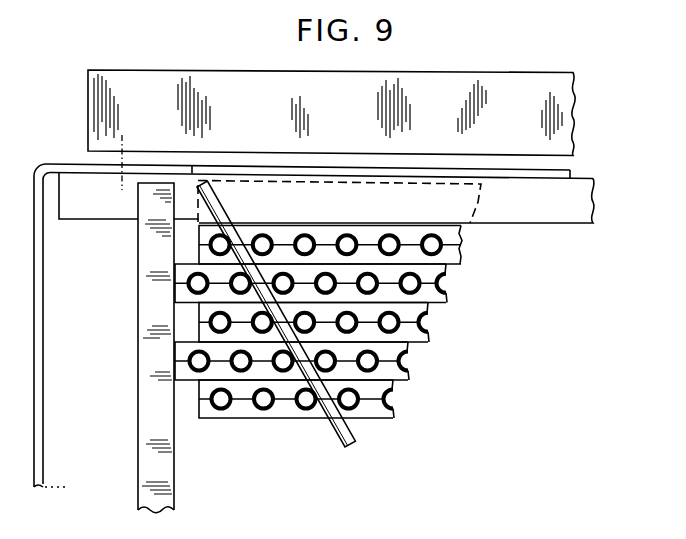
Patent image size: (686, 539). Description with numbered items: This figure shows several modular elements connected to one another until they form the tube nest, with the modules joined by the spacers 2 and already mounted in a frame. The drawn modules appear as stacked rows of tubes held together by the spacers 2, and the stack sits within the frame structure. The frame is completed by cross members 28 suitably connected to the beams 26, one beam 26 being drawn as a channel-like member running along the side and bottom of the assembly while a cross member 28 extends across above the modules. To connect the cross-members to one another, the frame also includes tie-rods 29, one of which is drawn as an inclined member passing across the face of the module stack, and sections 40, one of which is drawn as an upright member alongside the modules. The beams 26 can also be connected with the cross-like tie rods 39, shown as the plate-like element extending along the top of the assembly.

The spacers 2 is at (427, 271).
The beams 26 is at (37, 283).
The cross members 28 is at (562, 193).
The tie-rods 29 is at (227, 220).
The cross-like tie rods 39 is at (438, 92).
The sections 40 is at (153, 343).